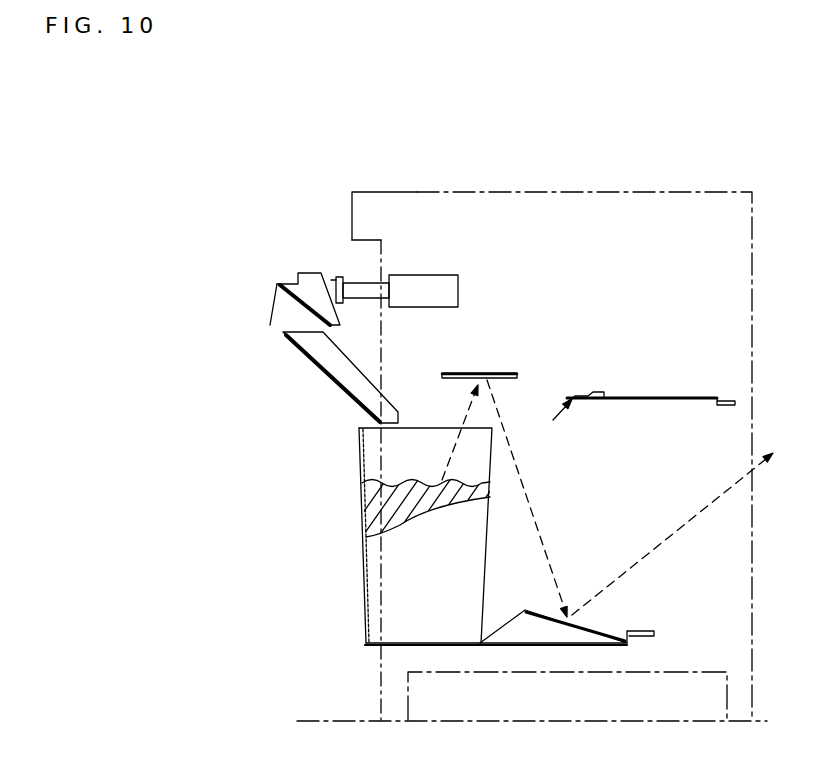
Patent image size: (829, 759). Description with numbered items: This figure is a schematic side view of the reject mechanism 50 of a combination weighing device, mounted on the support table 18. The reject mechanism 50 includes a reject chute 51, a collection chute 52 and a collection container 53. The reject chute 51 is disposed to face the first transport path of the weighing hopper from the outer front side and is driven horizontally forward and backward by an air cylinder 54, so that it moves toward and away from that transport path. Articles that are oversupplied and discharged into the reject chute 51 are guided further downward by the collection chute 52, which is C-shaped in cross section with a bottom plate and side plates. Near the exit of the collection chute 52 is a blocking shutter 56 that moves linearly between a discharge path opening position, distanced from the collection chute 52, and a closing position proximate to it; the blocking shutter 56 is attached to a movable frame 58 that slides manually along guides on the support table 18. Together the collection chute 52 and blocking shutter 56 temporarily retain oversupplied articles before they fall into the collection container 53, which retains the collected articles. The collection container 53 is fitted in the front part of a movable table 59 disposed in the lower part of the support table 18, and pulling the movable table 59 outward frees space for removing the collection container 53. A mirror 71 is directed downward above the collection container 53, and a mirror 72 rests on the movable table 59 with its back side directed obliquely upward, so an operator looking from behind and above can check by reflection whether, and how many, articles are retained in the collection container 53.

The support table 18 is at (666, 190).
The reject mechanism 50 is at (288, 363).
The reject chute 51 is at (313, 272).
The collection chute 52 is at (341, 390).
The collection container 53 is at (366, 560).
The air cylinder 54 is at (447, 275).
The blocking shutter 56 is at (566, 416).
The movable frame 58 is at (655, 395).
The movable table 59 is at (538, 648).
The mirror 71 is at (461, 379).
The mirror 72 is at (600, 635).